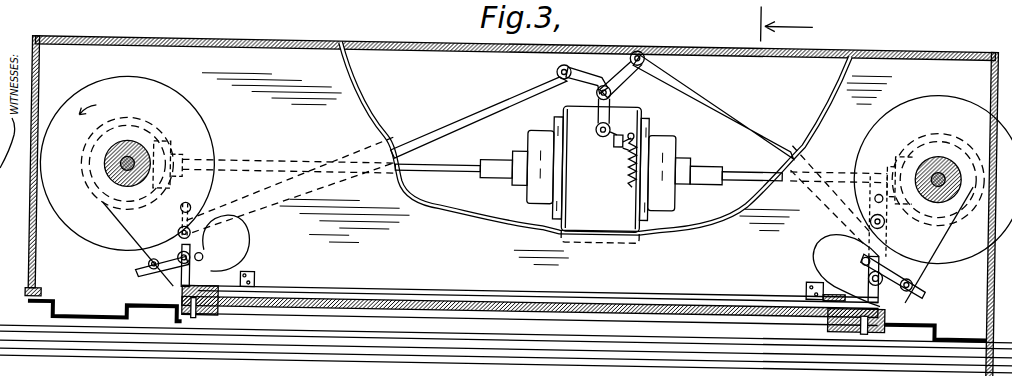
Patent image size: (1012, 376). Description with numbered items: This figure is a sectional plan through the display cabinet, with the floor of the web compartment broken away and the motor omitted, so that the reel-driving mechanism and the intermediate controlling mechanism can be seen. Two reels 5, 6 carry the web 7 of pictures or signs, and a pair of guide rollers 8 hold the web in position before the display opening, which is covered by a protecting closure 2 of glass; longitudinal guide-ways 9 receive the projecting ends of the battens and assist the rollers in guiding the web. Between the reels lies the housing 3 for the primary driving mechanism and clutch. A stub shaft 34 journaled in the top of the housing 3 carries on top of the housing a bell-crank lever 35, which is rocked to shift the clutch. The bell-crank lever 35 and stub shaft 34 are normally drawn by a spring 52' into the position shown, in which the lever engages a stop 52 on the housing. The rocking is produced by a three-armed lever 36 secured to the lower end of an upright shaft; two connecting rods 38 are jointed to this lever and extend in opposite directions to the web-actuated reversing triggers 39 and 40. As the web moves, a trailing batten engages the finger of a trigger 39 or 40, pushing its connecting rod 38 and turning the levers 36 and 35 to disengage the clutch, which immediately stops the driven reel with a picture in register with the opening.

The protecting closure 2 is at (787, 22).
The housing 3 is at (601, 174).
The reel 5 is at (145, 151).
The reel 6 is at (940, 158).
The web 7 is at (945, 228).
The guide rollers 8 is at (150, 278).
The longitudinal guide-ways 9 is at (595, 295).
The stub shaft 34 is at (597, 132).
The bell-crank lever 35 is at (612, 131).
The three-armed lever 36 is at (580, 77).
The connecting rods 38 is at (422, 128).
The reversing trigger 39 is at (870, 270).
The reversing trigger 40 is at (216, 244).
The stop 52 is at (616, 163).
The spring 52' is at (670, 137).